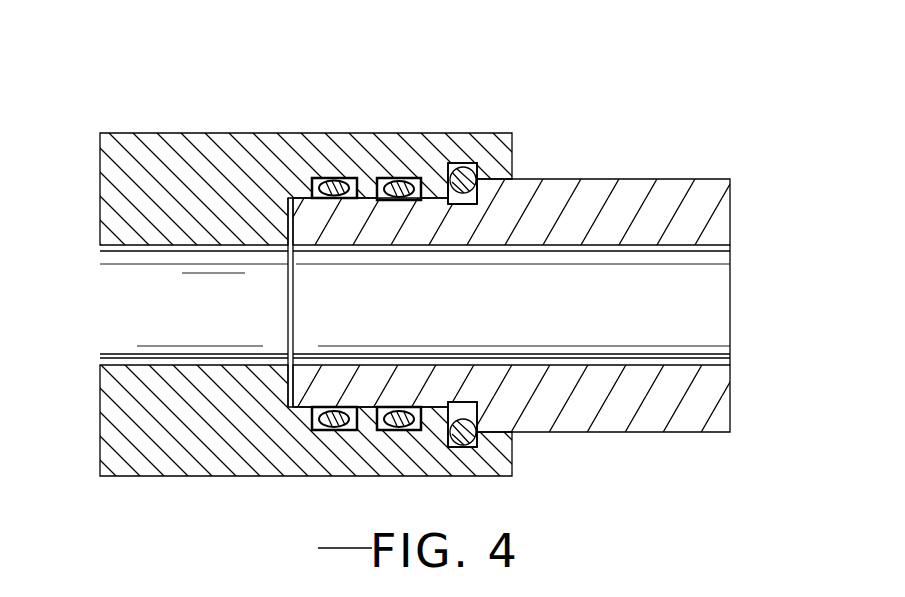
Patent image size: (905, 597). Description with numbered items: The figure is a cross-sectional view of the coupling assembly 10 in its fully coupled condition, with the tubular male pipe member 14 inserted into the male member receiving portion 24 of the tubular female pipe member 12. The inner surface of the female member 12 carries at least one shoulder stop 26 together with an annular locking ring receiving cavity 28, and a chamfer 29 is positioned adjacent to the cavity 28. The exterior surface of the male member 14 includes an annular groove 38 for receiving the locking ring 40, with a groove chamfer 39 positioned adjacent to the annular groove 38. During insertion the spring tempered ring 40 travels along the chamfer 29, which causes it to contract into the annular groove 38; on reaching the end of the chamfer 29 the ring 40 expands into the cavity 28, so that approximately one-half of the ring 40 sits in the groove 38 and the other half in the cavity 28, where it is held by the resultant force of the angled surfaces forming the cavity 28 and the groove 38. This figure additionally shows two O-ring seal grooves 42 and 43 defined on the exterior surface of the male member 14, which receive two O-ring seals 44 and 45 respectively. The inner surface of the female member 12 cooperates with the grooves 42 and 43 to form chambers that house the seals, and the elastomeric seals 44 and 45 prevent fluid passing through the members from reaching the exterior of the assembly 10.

The coupling assembly 10 is at (352, 48).
The female pipe member 12 is at (104, 100).
The male pipe member 14 is at (697, 148).
The male member receiving portion 24 is at (424, 176).
The shoulder stop 26 is at (286, 228).
The annular locking ring receiving cavity 28 is at (464, 166).
The chamfer 29 is at (484, 179).
The annular groove 38 is at (470, 196).
The groove chamfer 39 is at (448, 186).
The locking ring 40 is at (460, 198).
The O-ring seal groove 42 is at (342, 178).
The O-ring seal groove 43 is at (382, 190).
The O-ring seal 44 is at (322, 190).
The O-ring seal 45 is at (440, 178).